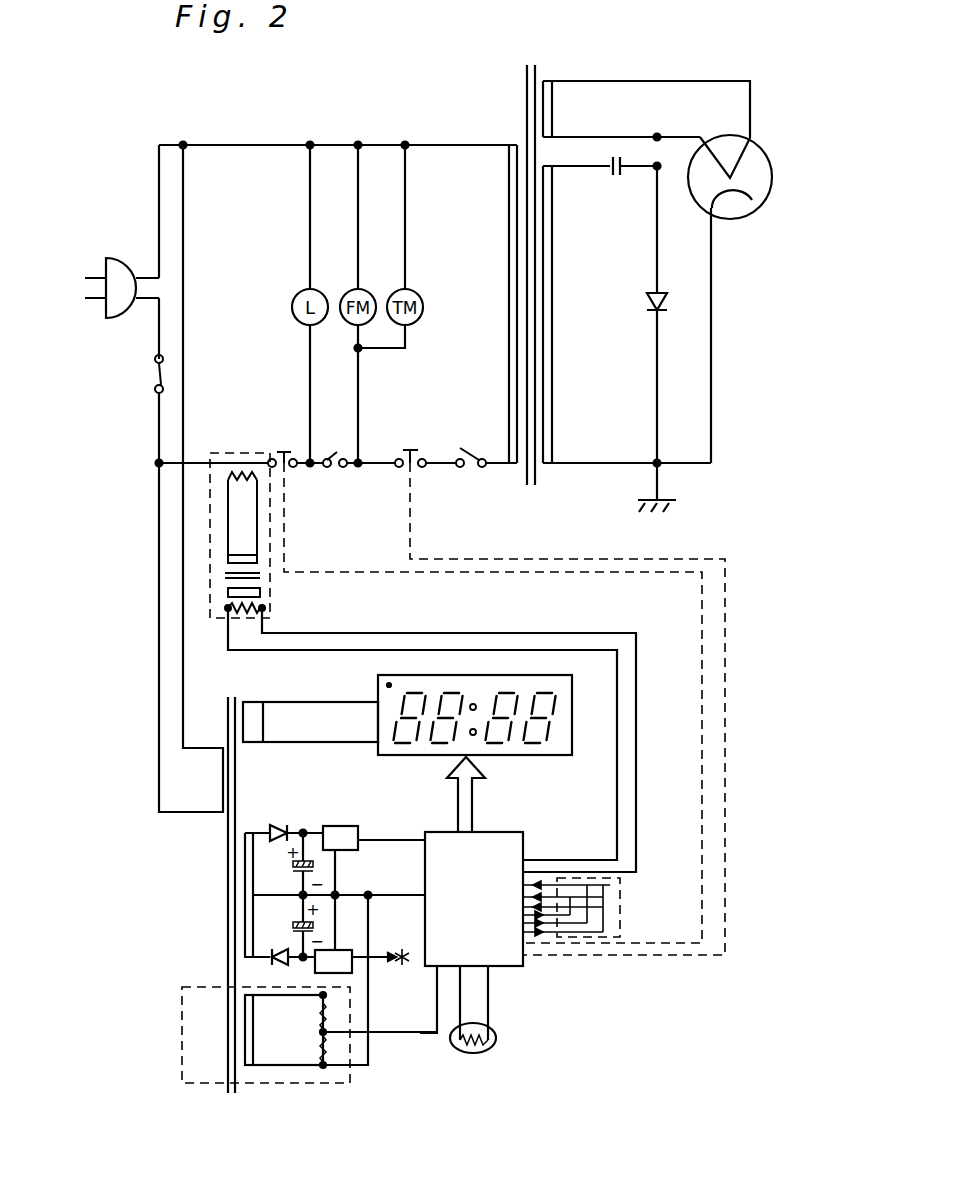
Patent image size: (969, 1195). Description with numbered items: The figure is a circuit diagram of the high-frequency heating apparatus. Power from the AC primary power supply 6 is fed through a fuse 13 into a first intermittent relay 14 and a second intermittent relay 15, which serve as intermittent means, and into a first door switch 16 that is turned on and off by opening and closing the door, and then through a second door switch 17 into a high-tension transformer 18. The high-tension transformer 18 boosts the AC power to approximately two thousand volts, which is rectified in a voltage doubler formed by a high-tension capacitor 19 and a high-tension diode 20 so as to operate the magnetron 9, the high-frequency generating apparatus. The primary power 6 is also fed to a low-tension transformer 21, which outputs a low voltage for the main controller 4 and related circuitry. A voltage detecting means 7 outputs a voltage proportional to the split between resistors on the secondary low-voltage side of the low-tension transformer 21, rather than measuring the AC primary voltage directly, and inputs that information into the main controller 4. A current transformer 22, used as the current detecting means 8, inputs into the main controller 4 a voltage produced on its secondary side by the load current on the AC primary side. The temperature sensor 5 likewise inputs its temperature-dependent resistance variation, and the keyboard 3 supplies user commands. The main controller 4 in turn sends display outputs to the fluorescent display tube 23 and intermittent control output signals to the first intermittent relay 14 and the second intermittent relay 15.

The keyboard 3 is at (620, 905).
The main controller 4 is at (513, 968).
The temperature sensor 5 is at (495, 1046).
The power supply 6 is at (122, 262).
The voltage detecting means 7 is at (183, 1040).
The current detecting means 8 is at (215, 450).
The magnetron 9 is at (757, 210).
The fuse 13 is at (157, 372).
The first intermittent relay 14 is at (283, 451).
The second intermittent relay 15 is at (410, 448).
The first door switch 16 is at (340, 452).
The second door switch 17 is at (470, 446).
The high-tension transformer 18 is at (509, 143).
The high-tension capacitor 19 is at (613, 176).
The high-tension diode 20 is at (650, 300).
The low-tension transformer 21 is at (216, 815).
The current transformer 22 is at (262, 574).
The fluorescent display tube 23 is at (573, 728).